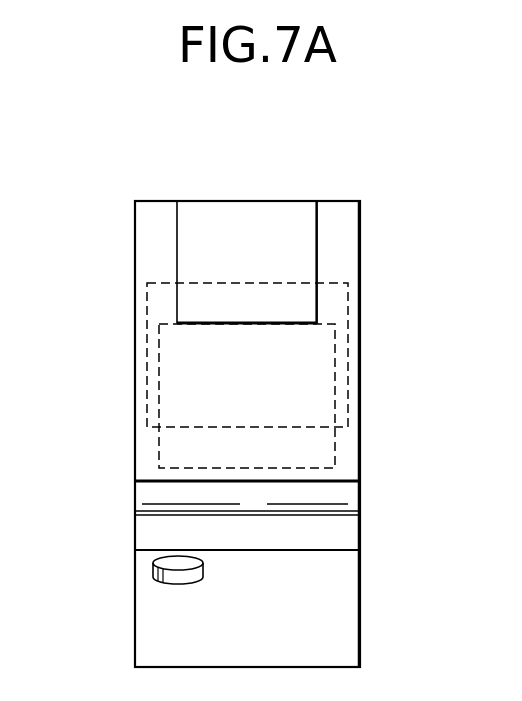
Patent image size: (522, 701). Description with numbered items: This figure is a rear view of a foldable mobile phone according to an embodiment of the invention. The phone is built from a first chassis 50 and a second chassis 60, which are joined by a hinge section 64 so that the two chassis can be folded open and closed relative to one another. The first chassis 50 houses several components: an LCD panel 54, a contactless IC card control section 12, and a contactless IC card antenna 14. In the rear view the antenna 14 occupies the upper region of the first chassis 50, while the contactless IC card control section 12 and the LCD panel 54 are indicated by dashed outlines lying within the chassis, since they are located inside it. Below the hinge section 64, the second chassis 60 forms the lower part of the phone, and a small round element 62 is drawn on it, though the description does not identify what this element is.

The contactless IC card antenna 14 is at (251, 213).
The first chassis 50 is at (337, 213).
The LCD panel 54 is at (147, 338).
The contactless IC card control section 12 is at (159, 398).
The hinge section 64 is at (349, 496).
The second chassis 60 is at (349, 582).
The button 62 is at (166, 561).